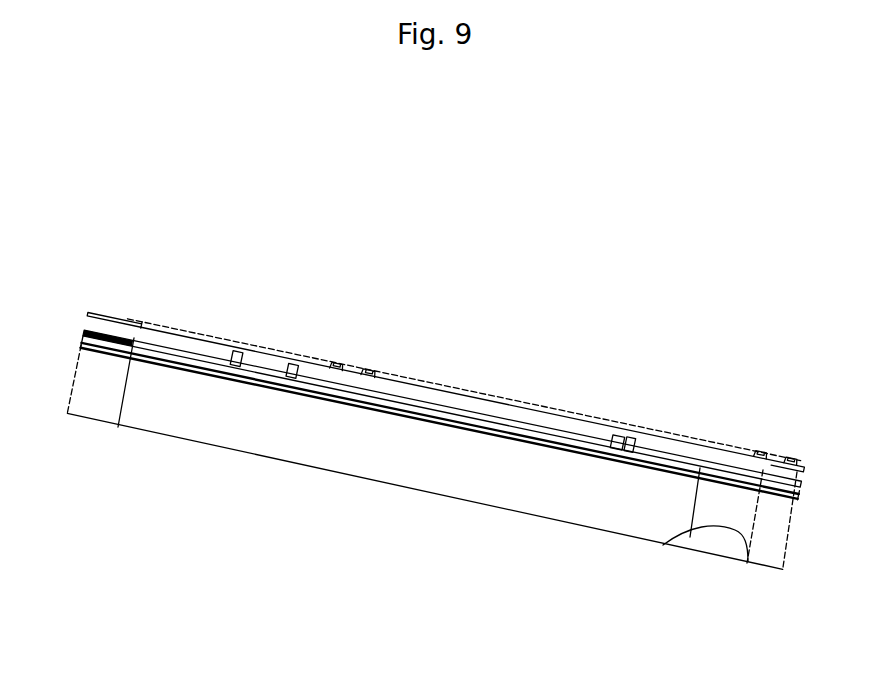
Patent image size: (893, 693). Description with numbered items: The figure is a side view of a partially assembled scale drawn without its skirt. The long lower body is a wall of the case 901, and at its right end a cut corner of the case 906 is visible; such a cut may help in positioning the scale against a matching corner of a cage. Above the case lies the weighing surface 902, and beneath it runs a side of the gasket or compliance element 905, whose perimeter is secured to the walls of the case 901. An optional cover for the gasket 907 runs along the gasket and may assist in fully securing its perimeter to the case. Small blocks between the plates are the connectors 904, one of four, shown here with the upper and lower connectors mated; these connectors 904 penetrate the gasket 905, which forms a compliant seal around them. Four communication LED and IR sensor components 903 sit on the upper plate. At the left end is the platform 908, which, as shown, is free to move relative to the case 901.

The wall of the case 901 is at (393, 448).
The weighing surface 902 is at (519, 403).
The communication LED and IR sensor components 903 is at (370, 365).
The connector 904 is at (240, 356).
The gasket or compliance element 905 is at (86, 335).
The cut corner of the case 906 is at (722, 545).
The cover for the gasket 907 is at (800, 491).
The platform 908 is at (87, 313).